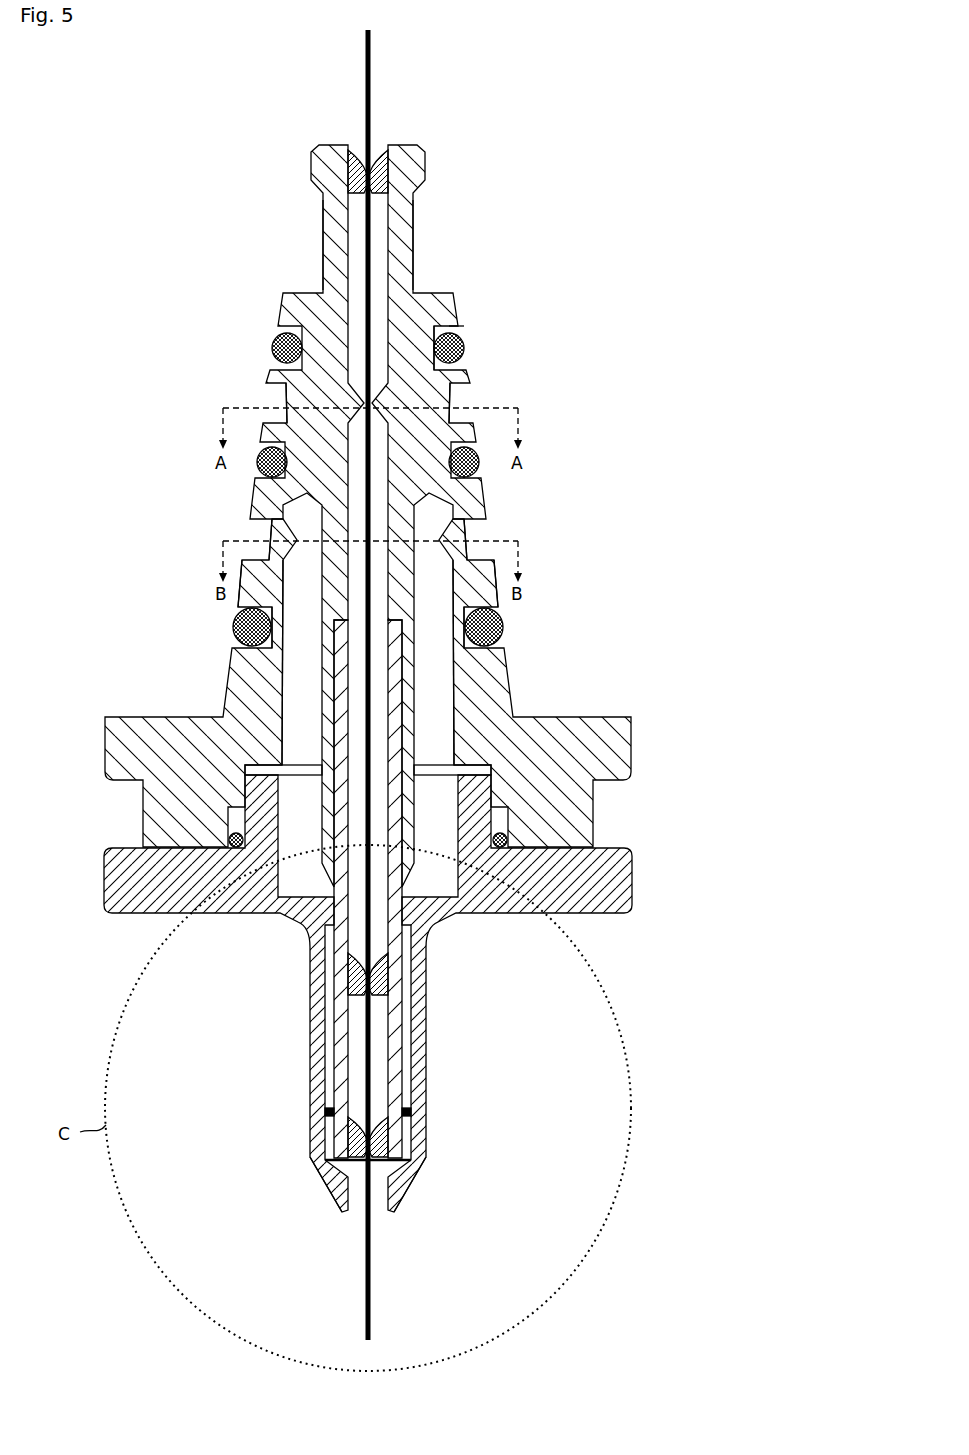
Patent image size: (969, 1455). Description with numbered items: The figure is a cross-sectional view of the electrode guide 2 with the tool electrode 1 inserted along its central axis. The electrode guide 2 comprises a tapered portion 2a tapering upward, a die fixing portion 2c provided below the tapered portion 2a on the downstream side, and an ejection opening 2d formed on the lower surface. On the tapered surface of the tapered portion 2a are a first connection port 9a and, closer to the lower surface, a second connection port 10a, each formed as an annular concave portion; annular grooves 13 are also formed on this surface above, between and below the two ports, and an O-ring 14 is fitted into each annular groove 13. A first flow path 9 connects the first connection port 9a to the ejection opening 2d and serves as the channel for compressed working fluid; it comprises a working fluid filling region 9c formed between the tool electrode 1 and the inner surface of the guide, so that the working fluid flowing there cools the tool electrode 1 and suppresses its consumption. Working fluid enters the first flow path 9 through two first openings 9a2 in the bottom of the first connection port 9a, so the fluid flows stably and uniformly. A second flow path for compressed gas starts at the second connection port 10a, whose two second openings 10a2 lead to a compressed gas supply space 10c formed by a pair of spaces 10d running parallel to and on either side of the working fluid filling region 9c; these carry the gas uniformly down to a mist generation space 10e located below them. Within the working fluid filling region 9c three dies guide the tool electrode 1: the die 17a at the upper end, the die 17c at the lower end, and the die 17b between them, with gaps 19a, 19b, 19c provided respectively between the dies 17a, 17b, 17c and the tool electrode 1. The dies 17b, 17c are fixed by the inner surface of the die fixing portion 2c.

The tool electrode 1 is at (370, 53).
The electrode guide 2 is at (487, 158).
The tapered portion 2a is at (581, 300).
The die fixing portion 2c is at (680, 735).
The ejection opening 2d is at (378, 1213).
The first flow path 9 is at (313, 311).
The first connection port 9a is at (255, 380).
The first openings 9a2 is at (329, 407).
The working fluid filling region 9c is at (386, 283).
The second connection port 10a is at (242, 523).
The second openings 10a2 is at (272, 537).
The compressed gas supply space 10c is at (440, 509).
The pair of spaces 10d is at (318, 685).
The mist generation space 10e is at (386, 1170).
The annular groove 13 is at (470, 330).
The O-ring 14 is at (465, 346).
The die 17a is at (345, 163).
The die 17b is at (348, 982).
The die 17c is at (350, 1140).
The gap 19a is at (358, 154).
The gap 19b is at (382, 950).
The gap 19c is at (383, 1104).